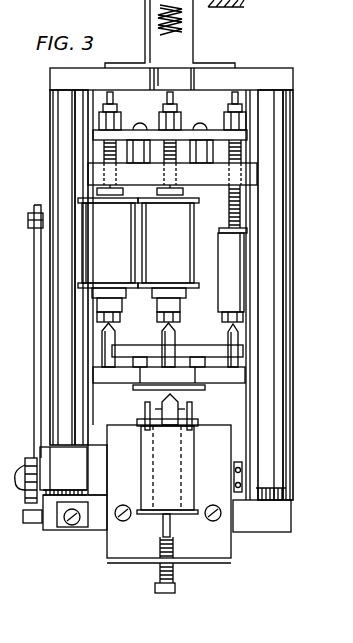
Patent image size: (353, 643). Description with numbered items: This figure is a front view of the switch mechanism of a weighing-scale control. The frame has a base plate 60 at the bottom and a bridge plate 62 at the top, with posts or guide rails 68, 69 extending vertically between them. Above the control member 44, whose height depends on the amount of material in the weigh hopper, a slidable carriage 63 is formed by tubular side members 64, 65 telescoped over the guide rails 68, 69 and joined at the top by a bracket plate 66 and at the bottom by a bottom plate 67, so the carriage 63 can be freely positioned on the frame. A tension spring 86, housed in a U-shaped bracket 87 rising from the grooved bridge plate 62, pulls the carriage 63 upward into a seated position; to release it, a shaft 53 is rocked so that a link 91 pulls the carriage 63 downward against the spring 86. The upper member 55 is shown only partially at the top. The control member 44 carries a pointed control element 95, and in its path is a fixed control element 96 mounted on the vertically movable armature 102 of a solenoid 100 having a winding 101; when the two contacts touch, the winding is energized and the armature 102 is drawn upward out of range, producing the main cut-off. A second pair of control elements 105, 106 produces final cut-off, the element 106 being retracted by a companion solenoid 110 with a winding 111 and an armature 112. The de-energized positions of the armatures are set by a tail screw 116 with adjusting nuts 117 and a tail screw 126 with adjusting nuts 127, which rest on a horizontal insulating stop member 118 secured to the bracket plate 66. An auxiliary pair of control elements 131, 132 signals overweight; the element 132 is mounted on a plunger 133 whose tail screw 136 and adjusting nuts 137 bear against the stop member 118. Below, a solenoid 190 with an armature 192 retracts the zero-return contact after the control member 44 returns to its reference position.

The bridge plate 62 is at (52, 80).
The guide rail 69 is at (57, 127).
The tubular side member 65 is at (50, 188).
The carriage 63 is at (42, 302).
The guide rail 68 is at (286, 118).
The tubular side member 64 is at (293, 216).
The base plate 60 is at (266, 532).
The bracket plate 66 is at (203, 185).
The bottom plate 67 is at (240, 466).
The tension spring 86 is at (187, 17).
The U-shaped bracket 87 is at (194, 37).
The upper member 55 is at (235, 5).
The link 91 is at (34, 351).
The shaft 53 is at (23, 460).
The control member 44 is at (115, 564).
The stop member 118 is at (94, 130).
The tail screw 116 is at (110, 108).
The adjusting nuts 117 is at (118, 118).
The tail screw 126 is at (175, 109).
The adjusting nuts 127 is at (178, 119).
The tail screw 136 is at (237, 108).
The adjusting nuts 137 is at (239, 119).
The solenoid 100 is at (78, 207).
The winding 101 is at (85, 234).
The armature 102 is at (123, 307).
The fixed control element 96 is at (121, 319).
The control element 95 is at (116, 338).
The solenoid 110 is at (197, 228).
The winding 111 is at (190, 233).
The armature 112 is at (185, 307).
The control element 106 is at (181, 319).
The control element 105 is at (176, 338).
The plunger 133 is at (246, 259).
The control element 132 is at (243, 320).
The control element 131 is at (239, 338).
The solenoid 190 is at (194, 464).
The armature 192 is at (175, 533).